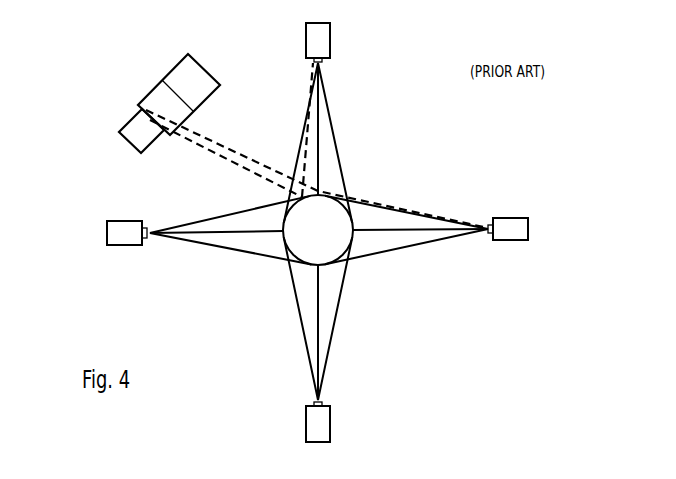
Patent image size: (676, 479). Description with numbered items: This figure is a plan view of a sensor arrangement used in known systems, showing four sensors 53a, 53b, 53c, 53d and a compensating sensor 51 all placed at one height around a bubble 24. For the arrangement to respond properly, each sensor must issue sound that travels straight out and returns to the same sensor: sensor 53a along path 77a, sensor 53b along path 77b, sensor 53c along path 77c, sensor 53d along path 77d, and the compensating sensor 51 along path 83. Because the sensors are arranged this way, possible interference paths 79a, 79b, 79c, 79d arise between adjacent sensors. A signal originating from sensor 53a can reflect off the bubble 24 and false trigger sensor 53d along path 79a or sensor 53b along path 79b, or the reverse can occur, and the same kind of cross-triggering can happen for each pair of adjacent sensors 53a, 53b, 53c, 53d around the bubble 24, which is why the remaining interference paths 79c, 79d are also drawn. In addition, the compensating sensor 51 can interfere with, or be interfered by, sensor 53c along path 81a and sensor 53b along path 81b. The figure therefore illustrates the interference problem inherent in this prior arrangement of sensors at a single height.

The bubble 24 is at (350, 216).
The compensating sensor 51 is at (143, 130).
The sensor 53a is at (320, 424).
The sensor 53b is at (512, 227).
The sensor 53c is at (318, 38).
The sensor 53d is at (122, 233).
The path 77a is at (317, 337).
The path 77b is at (435, 229).
The path 77c is at (317, 128).
The path 77d is at (212, 231).
The interference path 79a is at (302, 302).
The interference path 79b is at (396, 244).
The interference path 79c is at (334, 157).
The interference path 79d is at (242, 213).
The path 81a is at (227, 153).
The path 81b is at (278, 173).
The path 83 is at (183, 95).